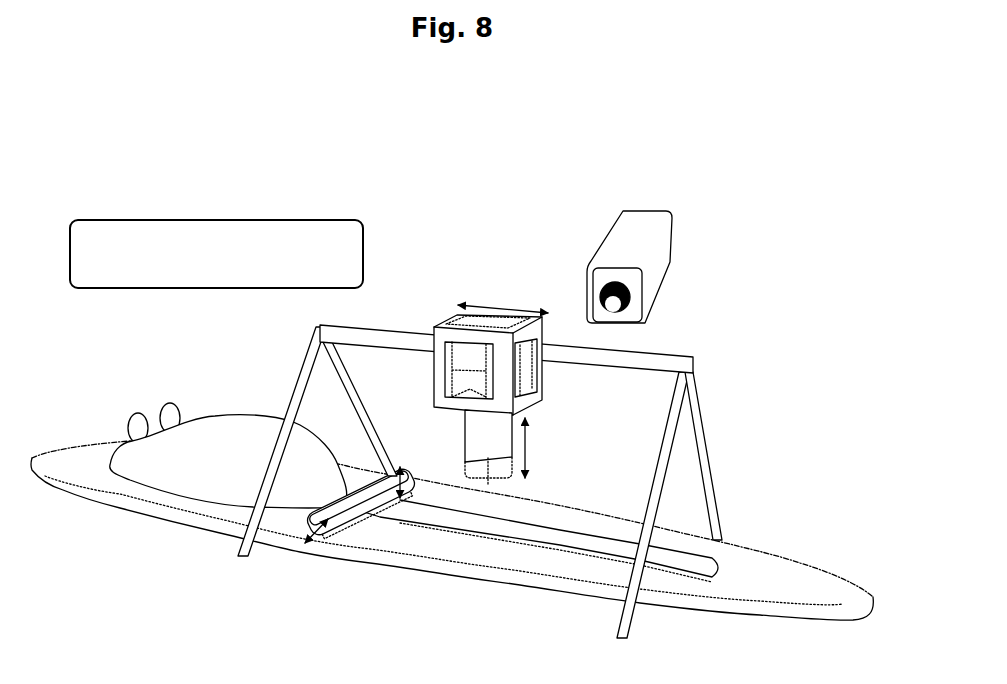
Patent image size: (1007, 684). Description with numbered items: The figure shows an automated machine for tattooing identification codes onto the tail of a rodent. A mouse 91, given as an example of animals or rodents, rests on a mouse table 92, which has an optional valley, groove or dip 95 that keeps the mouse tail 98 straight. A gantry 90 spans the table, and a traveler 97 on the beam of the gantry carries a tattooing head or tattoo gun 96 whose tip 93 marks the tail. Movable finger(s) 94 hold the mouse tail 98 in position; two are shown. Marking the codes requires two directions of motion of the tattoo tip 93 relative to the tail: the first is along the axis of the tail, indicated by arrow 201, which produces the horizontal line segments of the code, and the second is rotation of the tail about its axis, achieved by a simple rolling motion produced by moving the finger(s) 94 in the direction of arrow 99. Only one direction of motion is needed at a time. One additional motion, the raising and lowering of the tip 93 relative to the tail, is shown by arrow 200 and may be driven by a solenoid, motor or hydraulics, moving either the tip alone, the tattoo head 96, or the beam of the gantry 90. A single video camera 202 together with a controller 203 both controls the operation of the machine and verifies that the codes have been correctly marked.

The gantry 90 is at (700, 365).
The mouse 91 is at (162, 445).
The mouse table 92 is at (113, 503).
The tip of tattooing head 93 is at (485, 465).
The finger 94 is at (360, 520).
The valley, groove or dip 95 is at (610, 565).
The tattooing head 96 is at (488, 437).
The traveler 97 is at (445, 333).
The mouse tail 98 is at (688, 562).
The arrow (direction of finger motion) 99 is at (317, 535).
The arrow (raising and lowering motion) 200 is at (528, 459).
The arrow (motion along tail axis) 201 is at (514, 300).
The video camera 202 is at (653, 270).
The controller 203 is at (323, 230).